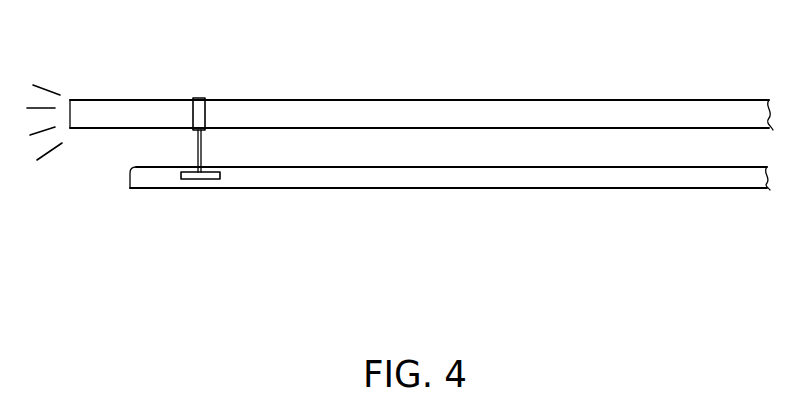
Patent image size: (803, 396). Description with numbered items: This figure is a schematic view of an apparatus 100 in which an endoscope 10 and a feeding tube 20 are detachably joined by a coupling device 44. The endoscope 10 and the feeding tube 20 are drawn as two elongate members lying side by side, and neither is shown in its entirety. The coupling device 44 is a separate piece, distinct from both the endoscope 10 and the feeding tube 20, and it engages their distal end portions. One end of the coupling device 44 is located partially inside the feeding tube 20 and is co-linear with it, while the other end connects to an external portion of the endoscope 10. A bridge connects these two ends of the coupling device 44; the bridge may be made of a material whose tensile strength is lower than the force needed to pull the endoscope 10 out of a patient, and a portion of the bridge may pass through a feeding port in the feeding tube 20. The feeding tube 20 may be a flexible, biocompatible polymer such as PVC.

The endoscope 10 is at (421, 76).
The feeding tube 20 is at (437, 218).
The coupling device 44 is at (202, 144).
The apparatus 100 is at (256, 325).